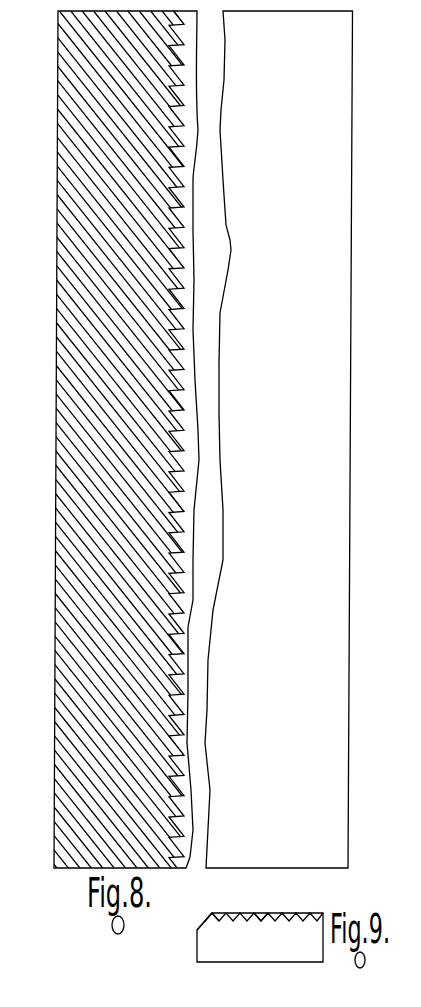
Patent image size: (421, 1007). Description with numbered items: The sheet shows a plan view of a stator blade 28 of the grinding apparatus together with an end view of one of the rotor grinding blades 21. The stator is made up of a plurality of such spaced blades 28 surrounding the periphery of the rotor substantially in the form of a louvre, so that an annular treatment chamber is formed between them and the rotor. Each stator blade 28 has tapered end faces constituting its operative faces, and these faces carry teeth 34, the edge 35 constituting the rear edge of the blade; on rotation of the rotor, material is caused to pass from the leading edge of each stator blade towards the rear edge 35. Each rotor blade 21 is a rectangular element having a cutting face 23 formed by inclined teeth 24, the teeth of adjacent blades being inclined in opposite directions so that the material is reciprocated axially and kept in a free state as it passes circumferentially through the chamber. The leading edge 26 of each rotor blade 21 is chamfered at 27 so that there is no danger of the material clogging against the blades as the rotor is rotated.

In FIG. 9, the grinding blade 21 is at (250, 950).
In FIG. 9, the cutting face 23 is at (270, 913).
In FIG. 9, the inclined teeth 24 is at (265, 918).
In FIG. 9, the leading edge 26 is at (197, 945).
In FIG. 9, the chamfer 27 is at (213, 922).
In FIG. 8, the stator blade 28 is at (336, 265).
In FIG. 8, the teeth 34 is at (80, 300).
In FIG. 8, the rear edge 35 is at (57, 464).